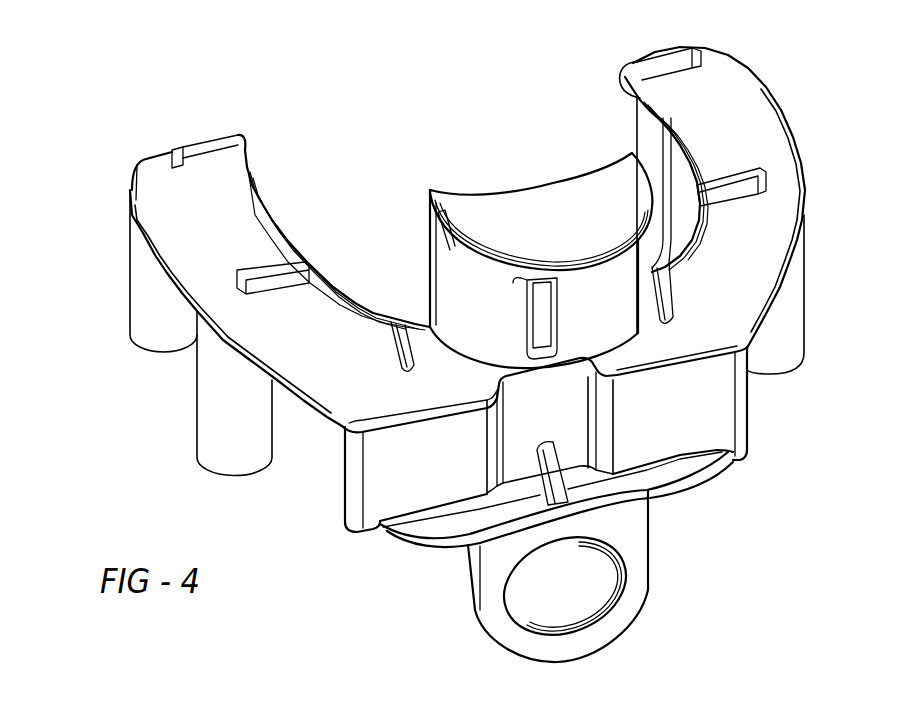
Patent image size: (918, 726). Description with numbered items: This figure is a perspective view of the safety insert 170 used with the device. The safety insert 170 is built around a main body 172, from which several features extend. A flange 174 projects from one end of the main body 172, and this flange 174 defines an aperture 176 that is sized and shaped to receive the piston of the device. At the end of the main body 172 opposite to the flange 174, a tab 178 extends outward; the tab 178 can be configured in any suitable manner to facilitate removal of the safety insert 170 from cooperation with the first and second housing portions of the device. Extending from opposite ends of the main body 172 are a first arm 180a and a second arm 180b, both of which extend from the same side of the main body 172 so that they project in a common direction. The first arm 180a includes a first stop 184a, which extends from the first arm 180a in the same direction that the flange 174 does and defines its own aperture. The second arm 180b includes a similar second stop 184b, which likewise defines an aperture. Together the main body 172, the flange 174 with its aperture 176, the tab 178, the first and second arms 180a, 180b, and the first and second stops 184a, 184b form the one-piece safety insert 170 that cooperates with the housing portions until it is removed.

The safety insert 170 is at (140, 391).
The main body 172 is at (717, 405).
The flange 174 is at (523, 660).
The aperture 176 is at (594, 621).
The tab 178 is at (548, 203).
The first arm 180a is at (738, 127).
The second arm 180b is at (188, 226).
The first stop 184a is at (783, 325).
The second stop 184b is at (240, 417).